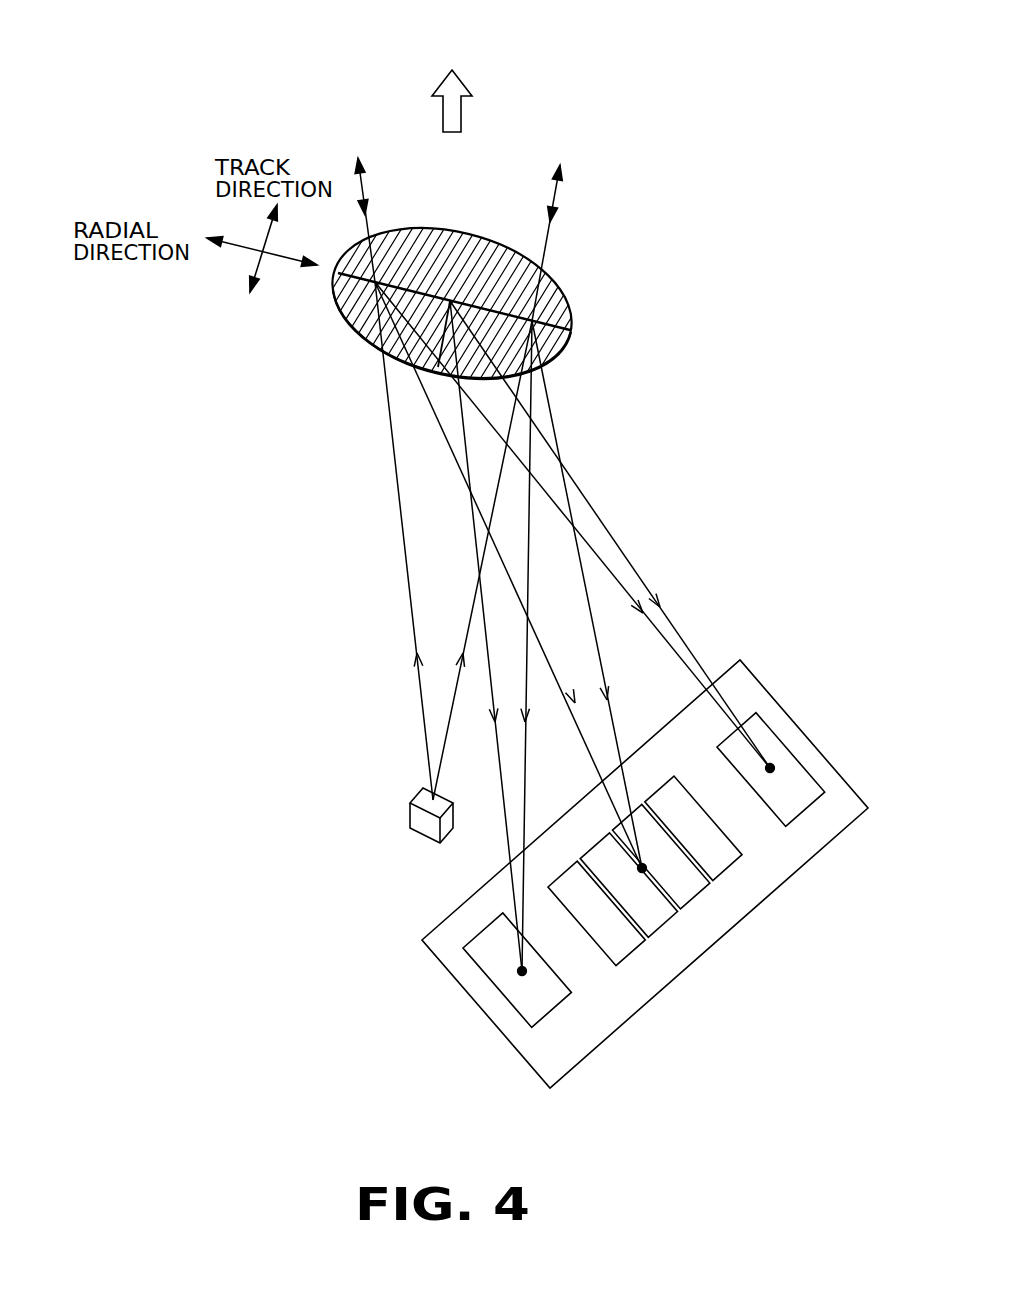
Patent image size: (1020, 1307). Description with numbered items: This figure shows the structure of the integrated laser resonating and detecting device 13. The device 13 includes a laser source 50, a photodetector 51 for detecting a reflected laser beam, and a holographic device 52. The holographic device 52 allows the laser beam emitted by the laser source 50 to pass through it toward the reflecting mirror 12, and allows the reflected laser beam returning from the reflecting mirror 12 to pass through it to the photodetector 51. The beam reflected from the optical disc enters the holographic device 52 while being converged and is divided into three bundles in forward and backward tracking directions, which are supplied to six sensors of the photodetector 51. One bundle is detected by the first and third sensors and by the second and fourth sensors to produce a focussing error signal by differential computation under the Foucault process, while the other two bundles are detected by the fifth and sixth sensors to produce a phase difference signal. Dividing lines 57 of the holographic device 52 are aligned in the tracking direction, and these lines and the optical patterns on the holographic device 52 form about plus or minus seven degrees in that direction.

The reflecting mirror 12 is at (446, 70).
The laser resonating and detecting device 13 is at (648, 462).
The laser source 50 is at (425, 826).
The photodetector 51 is at (741, 930).
The holographic device 52 is at (566, 312).
The dividing lines 57 is at (440, 333).